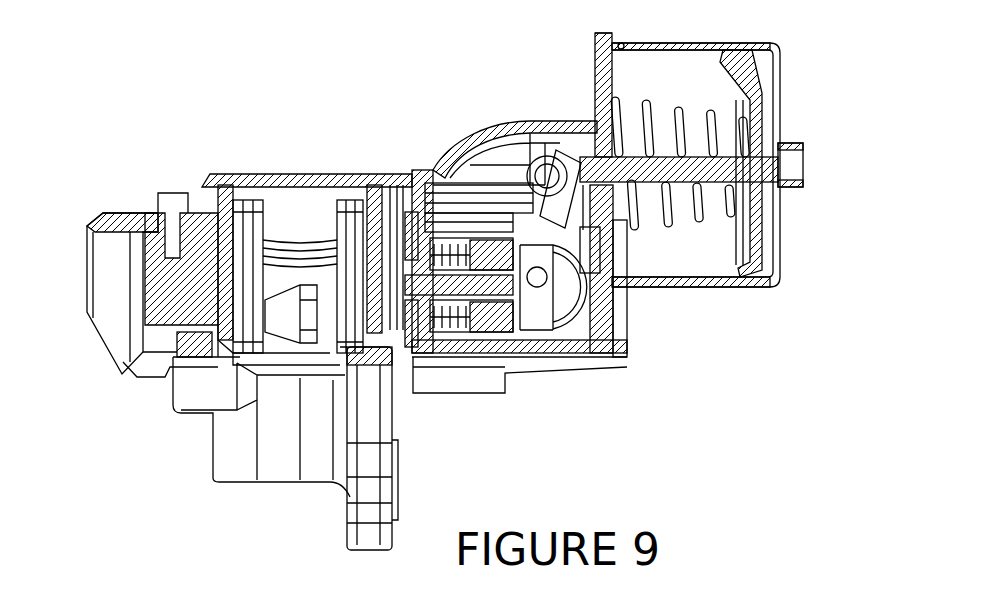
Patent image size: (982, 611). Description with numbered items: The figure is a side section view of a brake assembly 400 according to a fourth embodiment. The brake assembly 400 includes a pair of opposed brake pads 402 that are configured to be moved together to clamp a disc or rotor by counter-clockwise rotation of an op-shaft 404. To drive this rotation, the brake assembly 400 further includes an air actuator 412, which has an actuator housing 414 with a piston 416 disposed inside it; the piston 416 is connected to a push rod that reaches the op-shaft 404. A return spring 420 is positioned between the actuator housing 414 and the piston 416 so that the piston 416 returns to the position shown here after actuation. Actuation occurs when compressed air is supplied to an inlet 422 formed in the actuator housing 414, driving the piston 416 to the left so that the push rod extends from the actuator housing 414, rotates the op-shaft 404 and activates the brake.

The brake assembly 400 is at (290, 108).
The brake pads 402 is at (252, 208).
The op-shaft 404 is at (552, 293).
The air actuator 412 is at (680, 293).
The actuator housing 414 is at (703, 43).
The piston 416 is at (753, 83).
The return spring 420 is at (652, 98).
The inlet 422 is at (788, 165).